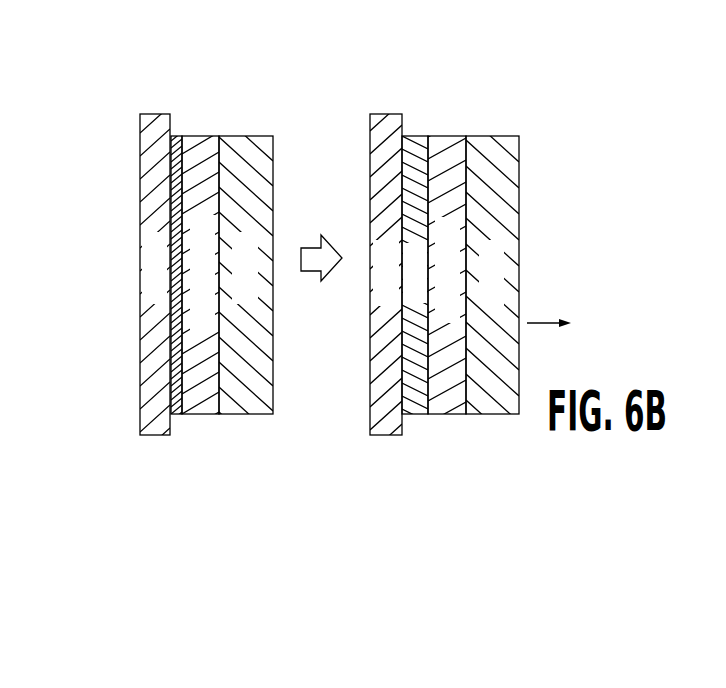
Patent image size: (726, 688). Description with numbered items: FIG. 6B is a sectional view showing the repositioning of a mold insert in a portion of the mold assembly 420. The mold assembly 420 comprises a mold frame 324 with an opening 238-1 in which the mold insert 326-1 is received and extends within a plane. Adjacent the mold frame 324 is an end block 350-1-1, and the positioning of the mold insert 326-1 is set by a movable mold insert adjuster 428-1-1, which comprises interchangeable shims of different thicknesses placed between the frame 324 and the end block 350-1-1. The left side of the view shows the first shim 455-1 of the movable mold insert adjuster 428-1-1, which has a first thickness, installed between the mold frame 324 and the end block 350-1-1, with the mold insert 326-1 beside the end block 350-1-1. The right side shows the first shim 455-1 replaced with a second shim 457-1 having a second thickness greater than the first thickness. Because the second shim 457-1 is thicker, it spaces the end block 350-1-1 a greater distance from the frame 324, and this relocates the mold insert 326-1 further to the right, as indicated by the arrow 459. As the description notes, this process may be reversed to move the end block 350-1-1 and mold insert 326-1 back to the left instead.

The mold frame 324 is at (395, 113).
The mold insert 326-1 is at (232, 136).
The end block 350-1-1 is at (206, 405).
The opening 238-1 is at (405, 132).
The movable mold insert adjuster 428-1-1 is at (177, 126).
The first shim 455-1 is at (176, 416).
The second shim 457-1 is at (407, 416).
The mold assembly 420 is at (439, 252).
The arrow 459 is at (543, 320).